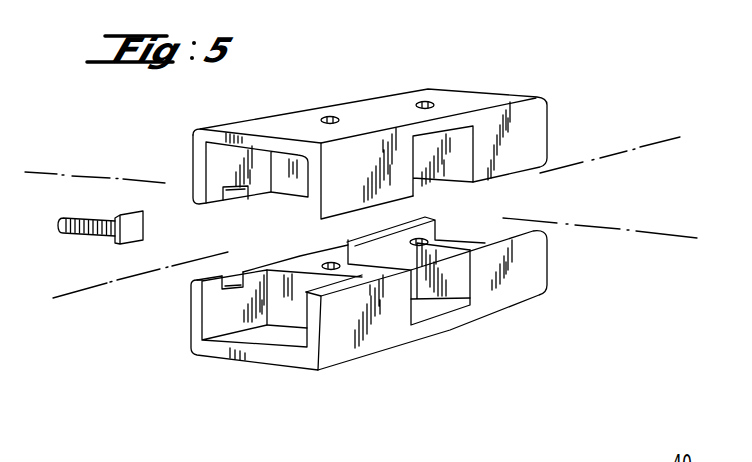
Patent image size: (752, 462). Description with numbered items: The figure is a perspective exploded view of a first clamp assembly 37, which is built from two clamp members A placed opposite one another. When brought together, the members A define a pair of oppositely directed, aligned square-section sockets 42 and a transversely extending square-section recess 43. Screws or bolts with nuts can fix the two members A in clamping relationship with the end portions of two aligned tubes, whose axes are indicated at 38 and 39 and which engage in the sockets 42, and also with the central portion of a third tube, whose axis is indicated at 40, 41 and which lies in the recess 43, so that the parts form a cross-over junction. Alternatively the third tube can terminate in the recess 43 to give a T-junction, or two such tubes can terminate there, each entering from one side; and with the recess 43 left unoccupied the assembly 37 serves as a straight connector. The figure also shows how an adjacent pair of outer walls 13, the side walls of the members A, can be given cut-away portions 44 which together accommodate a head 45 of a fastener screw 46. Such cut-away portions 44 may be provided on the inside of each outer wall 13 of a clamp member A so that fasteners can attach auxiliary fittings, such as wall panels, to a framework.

The outer wall 13 is at (217, 160).
The first clamp assembly 37 is at (547, 336).
The tube axis 38 is at (64, 294).
The tube axis 39 is at (663, 138).
The tube axis 40 is at (45, 172).
The tube axis 41 is at (675, 233).
The square-section socket 42 is at (483, 221).
The square-section recess 43 is at (460, 158).
The cut-away portion 44 is at (242, 270).
The head 45 is at (126, 233).
The fastener screw 46 is at (86, 214).
The clamp member A is at (356, 88).